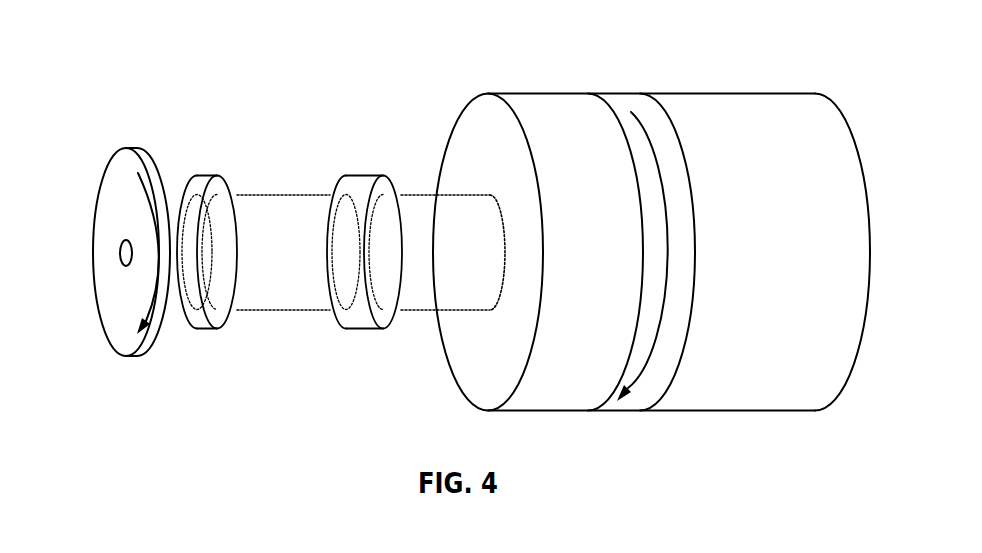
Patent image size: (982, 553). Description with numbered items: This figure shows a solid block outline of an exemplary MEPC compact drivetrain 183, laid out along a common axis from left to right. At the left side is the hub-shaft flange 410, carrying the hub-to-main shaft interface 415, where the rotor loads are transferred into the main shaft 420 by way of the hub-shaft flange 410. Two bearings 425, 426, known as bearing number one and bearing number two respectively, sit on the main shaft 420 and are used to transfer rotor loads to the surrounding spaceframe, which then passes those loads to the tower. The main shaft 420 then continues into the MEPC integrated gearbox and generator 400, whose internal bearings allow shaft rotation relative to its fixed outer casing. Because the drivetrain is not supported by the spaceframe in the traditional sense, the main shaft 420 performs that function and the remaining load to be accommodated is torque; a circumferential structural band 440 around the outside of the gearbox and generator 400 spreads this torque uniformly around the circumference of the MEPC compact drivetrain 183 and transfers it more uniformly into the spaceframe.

The MEPC compact drivetrain 183 is at (188, 46).
The MEPC integrated gearbox and generator 400 is at (717, 93).
The hub-shaft flange 410 is at (128, 357).
The hub-to-main shaft interface 415 is at (120, 257).
The main shaft 420 is at (277, 195).
The bearing number 1 425 is at (205, 330).
The bearing number 2 426 is at (362, 330).
The circumferential structural band 440 is at (615, 93).